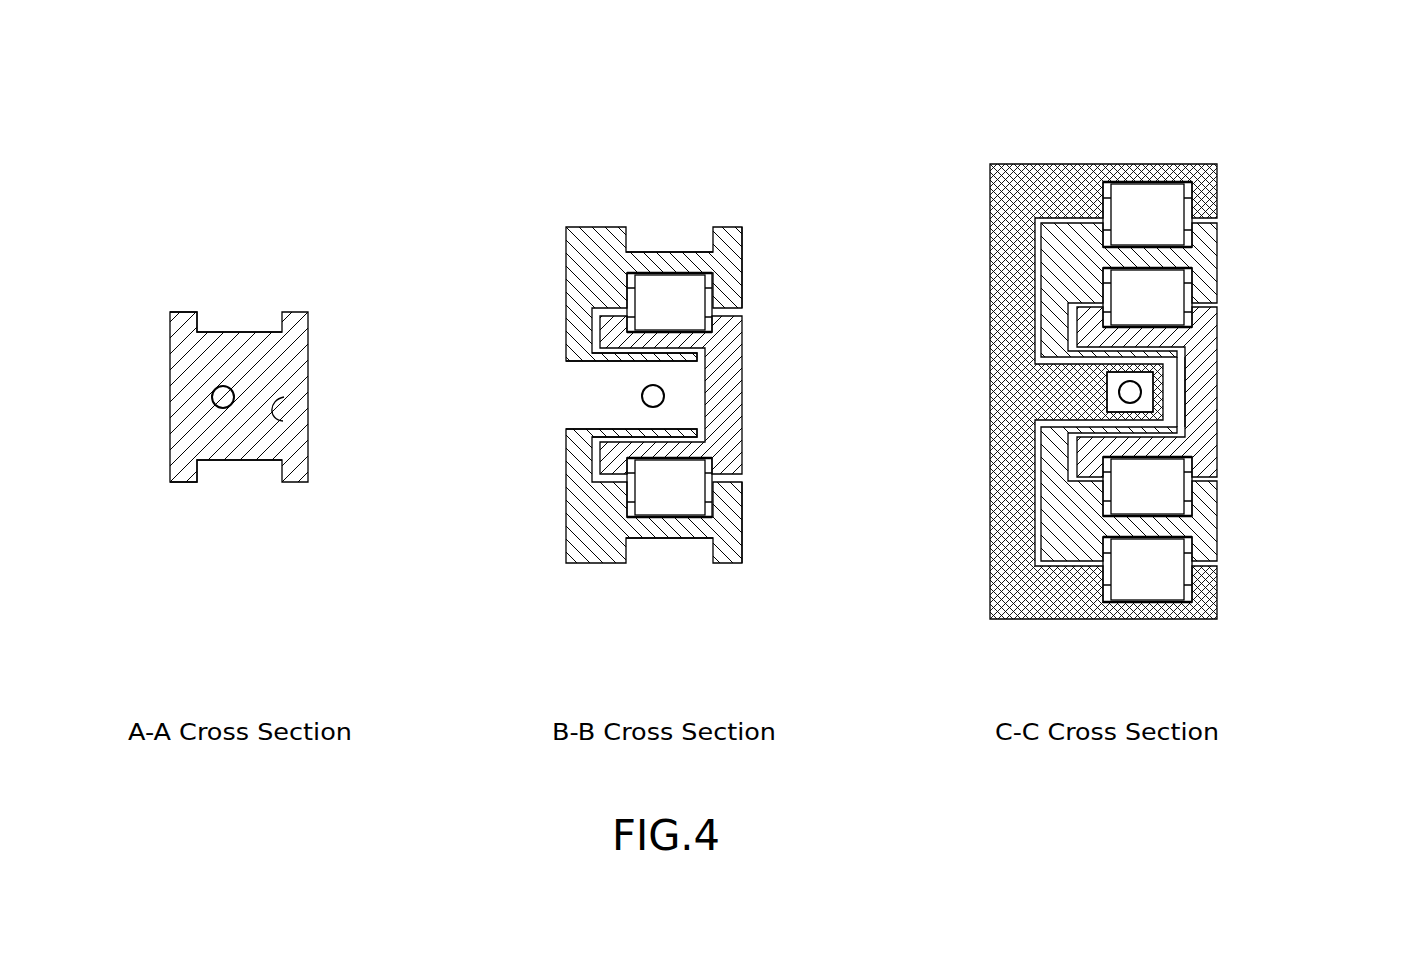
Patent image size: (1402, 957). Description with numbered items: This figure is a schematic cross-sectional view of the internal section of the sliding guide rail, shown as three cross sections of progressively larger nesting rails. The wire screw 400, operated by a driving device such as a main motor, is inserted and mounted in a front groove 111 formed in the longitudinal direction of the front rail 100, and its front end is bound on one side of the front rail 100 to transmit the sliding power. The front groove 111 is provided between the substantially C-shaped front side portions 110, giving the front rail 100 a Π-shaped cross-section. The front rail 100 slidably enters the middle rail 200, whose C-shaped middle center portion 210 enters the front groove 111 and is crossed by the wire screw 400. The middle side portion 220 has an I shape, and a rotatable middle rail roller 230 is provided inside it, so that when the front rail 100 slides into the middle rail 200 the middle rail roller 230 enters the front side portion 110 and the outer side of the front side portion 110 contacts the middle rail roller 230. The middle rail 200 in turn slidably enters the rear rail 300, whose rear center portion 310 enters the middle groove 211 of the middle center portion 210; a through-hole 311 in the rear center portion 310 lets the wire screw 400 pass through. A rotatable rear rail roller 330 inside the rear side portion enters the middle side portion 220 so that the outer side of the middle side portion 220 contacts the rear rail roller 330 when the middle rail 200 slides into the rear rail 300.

The front rail 100 is at (179, 298).
The front side portion 110 is at (210, 337).
The front groove 111 is at (284, 397).
The wire screw 400 is at (223, 386).
The middle rail 200 is at (560, 215).
The middle center portion 210 is at (707, 378).
The middle groove 211 is at (622, 368).
The middle side portion 220 is at (665, 262).
The middle rail roller 230 is at (693, 288).
The rear rail 300 is at (1039, 156).
The rear center portion 310 is at (1177, 394).
The through-hole 311 is at (1117, 373).
The rear rail roller 330 is at (1150, 200).